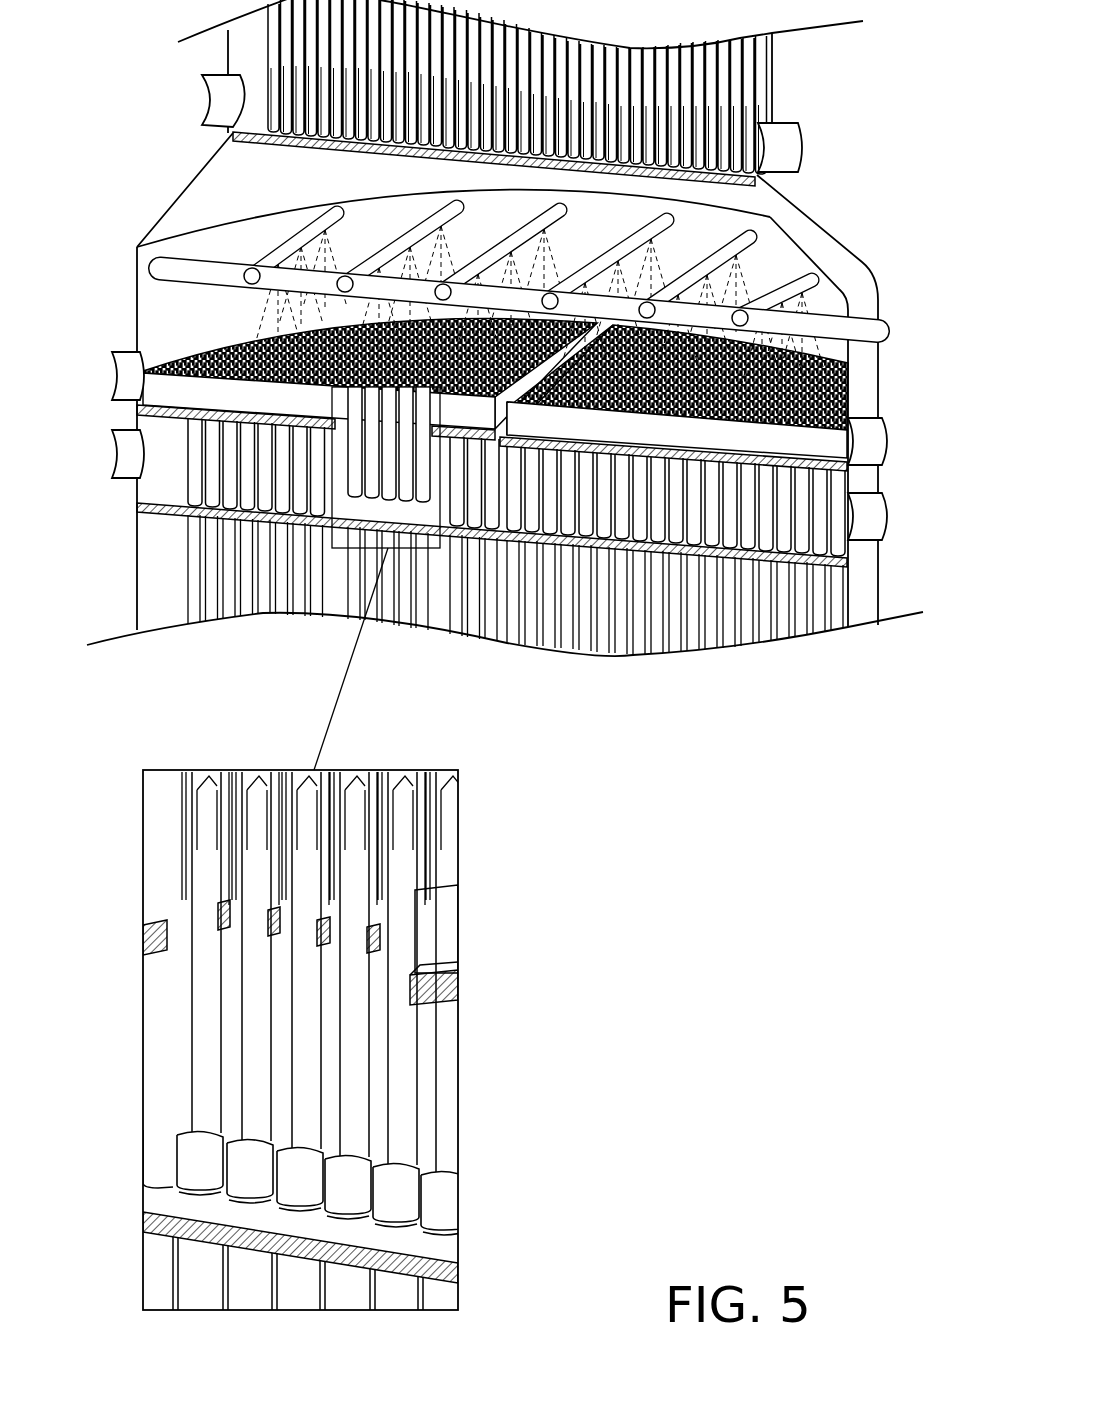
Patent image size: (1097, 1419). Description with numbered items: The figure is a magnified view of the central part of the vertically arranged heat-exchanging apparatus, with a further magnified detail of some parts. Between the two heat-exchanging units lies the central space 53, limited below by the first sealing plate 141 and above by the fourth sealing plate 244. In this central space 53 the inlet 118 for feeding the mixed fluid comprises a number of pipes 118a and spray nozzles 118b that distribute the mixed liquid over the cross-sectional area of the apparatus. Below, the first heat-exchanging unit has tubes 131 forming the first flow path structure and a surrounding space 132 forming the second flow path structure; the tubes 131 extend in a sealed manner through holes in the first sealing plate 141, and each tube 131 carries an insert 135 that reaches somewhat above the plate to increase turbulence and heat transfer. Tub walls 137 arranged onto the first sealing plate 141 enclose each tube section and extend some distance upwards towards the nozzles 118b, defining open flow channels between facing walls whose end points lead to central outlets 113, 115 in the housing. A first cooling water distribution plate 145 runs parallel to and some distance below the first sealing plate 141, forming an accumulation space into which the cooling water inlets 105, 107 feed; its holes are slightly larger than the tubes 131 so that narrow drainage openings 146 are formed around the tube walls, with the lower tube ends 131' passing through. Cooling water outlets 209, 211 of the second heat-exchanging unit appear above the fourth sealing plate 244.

The central space 53 is at (187, 300).
The cooling water inlet 105 is at (873, 520).
The cooling water inlet 107 is at (130, 453).
The central outlet 113 is at (868, 430).
The central outlet 115 is at (130, 373).
The inlet 118 is at (873, 330).
The pipes 118a is at (798, 277).
The spray nozzles 118b is at (762, 240).
The tubes 131 is at (569, 864).
The tube sleeve ends 131' is at (348, 1180).
The space surrounding the tubes 132 is at (167, 575).
The insert 135 is at (403, 875).
The tub walls 137 is at (825, 447).
The first sealing plate 141 is at (140, 413).
The first cooling water distribution plate 145 is at (187, 480).
The drainage openings 146 is at (420, 1217).
The cooling water outlet 209 is at (780, 150).
The cooling water outlet 211 is at (222, 105).
The fourth sealing plate 244 is at (257, 135).